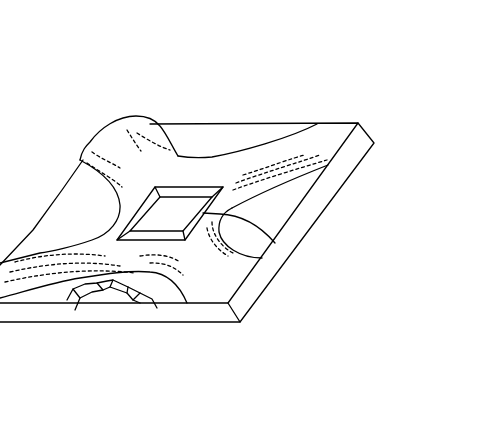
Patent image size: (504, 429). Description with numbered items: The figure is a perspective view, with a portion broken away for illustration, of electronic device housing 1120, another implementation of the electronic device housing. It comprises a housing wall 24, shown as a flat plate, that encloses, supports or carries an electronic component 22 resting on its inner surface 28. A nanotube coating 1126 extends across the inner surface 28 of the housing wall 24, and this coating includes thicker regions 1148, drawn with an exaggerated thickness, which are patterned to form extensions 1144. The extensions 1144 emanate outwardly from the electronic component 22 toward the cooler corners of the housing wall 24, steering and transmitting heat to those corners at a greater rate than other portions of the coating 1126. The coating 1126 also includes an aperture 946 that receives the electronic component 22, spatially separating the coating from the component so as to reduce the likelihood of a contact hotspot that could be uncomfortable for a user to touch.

The electronic device housing 1120 is at (313, 70).
The housing wall 24 is at (258, 292).
The thicker regions 1148 is at (155, 126).
The nanotube coating 1126 is at (258, 134).
The extensions 1144 is at (37, 255).
The electronic component 22 is at (187, 202).
The aperture 946 is at (275, 243).
The inner surface 28 is at (101, 302).